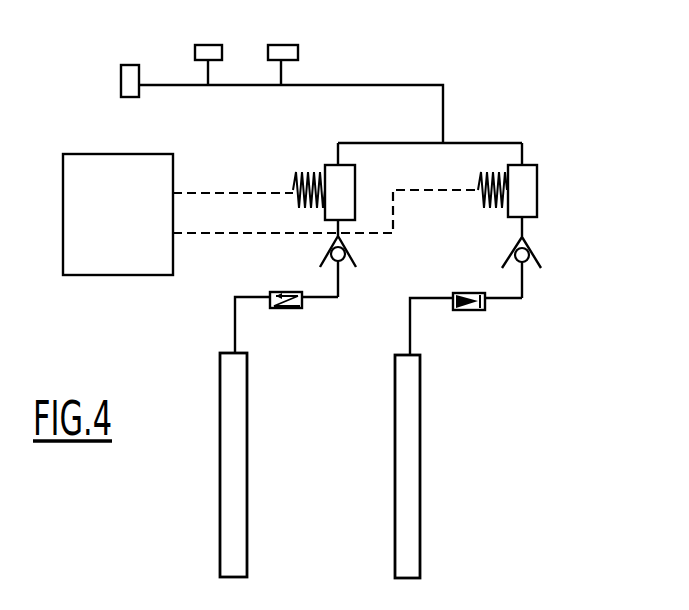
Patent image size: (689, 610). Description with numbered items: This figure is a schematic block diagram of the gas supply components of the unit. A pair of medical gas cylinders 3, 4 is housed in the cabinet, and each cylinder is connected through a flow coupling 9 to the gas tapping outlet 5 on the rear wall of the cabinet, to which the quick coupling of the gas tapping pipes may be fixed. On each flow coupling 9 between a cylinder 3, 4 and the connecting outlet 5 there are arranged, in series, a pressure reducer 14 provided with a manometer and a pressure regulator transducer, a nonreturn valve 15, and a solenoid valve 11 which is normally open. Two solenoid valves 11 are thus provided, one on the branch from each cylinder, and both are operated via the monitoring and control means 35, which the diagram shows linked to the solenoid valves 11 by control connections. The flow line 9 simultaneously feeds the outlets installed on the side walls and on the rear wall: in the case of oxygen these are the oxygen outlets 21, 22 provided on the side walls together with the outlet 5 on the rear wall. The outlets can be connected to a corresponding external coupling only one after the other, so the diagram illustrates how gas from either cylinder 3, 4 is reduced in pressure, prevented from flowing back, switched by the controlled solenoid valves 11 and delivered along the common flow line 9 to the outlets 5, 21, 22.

The medical gas cylinder 3 is at (232, 473).
The medical gas cylinder 4 is at (407, 483).
The gas tapping outlet 5 is at (124, 84).
The flow coupling 9 is at (443, 121).
The solenoid valve 11 is at (314, 167).
The pressure reducer 14 is at (285, 287).
The nonreturn valve 15 is at (529, 278).
The oxygen outlet 21 is at (226, 13).
The oxygen outlet 22 is at (278, 50).
The monitoring and control means 35 is at (140, 218).